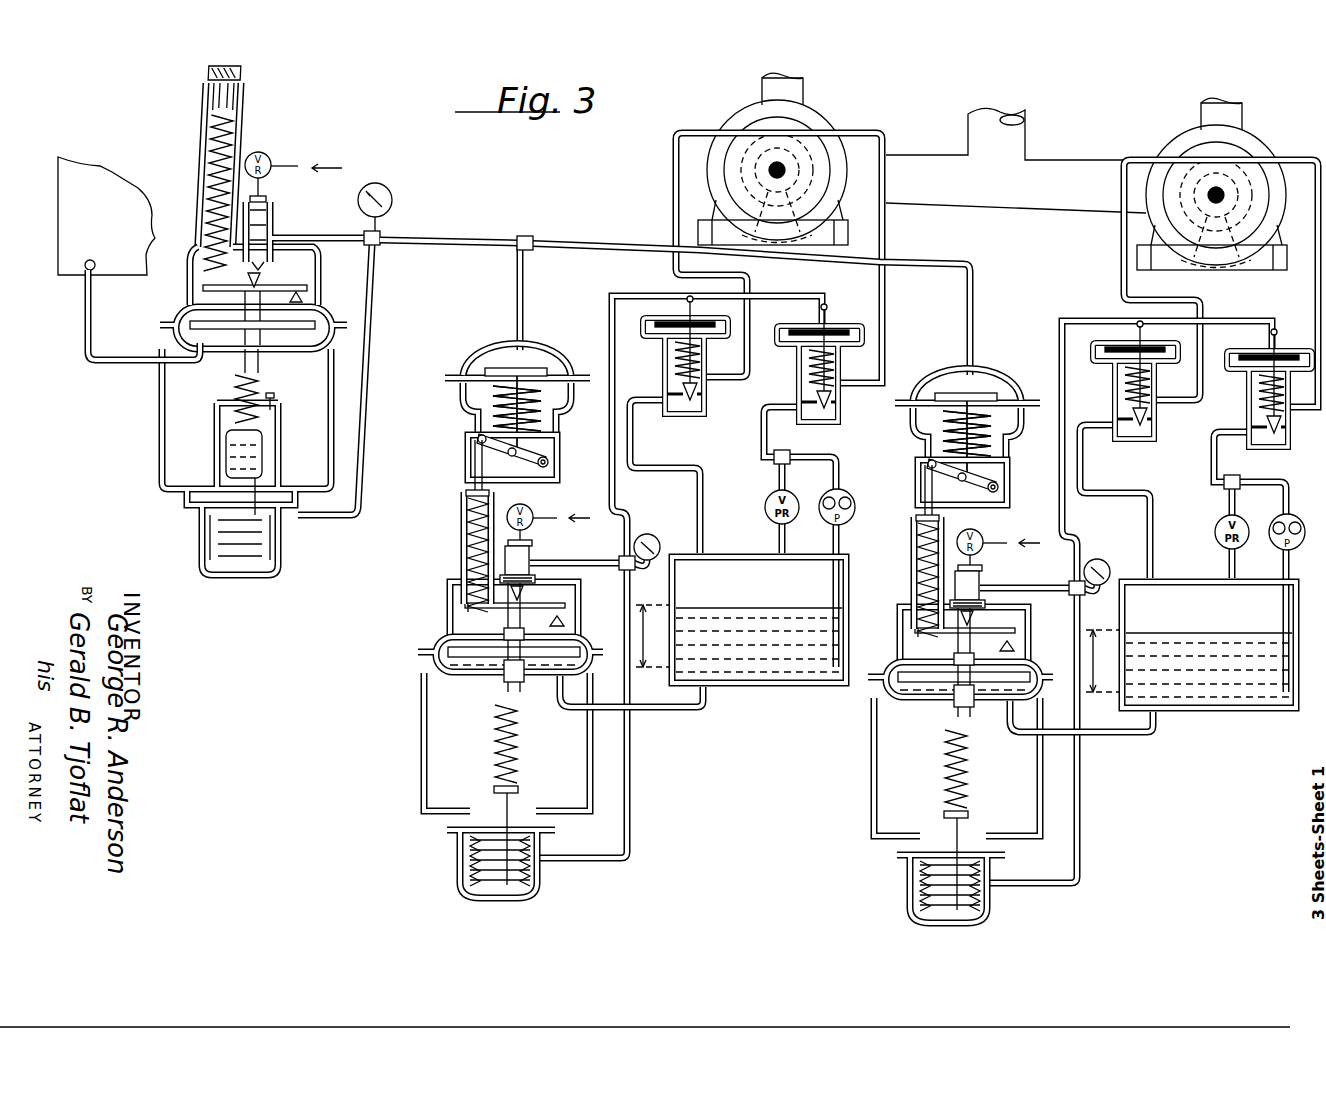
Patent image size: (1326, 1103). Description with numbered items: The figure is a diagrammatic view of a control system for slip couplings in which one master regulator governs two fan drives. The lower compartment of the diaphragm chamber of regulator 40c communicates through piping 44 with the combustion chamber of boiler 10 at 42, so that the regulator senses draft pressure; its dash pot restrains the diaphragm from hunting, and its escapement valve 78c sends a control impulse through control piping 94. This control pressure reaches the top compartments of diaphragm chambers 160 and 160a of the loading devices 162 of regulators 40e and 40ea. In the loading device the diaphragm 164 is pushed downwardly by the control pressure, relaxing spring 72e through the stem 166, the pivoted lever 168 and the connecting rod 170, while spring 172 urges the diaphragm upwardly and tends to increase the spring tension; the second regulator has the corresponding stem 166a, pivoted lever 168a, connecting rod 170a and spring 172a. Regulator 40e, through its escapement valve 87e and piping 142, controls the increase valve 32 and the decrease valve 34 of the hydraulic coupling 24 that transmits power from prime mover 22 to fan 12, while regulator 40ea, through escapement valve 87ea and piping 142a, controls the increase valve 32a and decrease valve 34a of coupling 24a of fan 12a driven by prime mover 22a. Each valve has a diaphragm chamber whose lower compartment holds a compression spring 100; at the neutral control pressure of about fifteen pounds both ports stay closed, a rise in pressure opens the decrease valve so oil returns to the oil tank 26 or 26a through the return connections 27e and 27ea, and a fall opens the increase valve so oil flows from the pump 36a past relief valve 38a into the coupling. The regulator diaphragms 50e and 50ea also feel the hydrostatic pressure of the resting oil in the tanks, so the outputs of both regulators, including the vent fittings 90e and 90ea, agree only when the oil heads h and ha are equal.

The boiler 10 is at (134, 180).
The fan 12 is at (742, 111).
The fan 12a is at (1257, 142).
The prime mover 22 is at (745, 131).
The prime mover 22a is at (1270, 180).
The hydraulic coupling 24 is at (705, 184).
The hydraulic coupling 24a is at (1256, 210).
The oil tank 26 is at (728, 687).
The oil tank 26a is at (1209, 660).
The pipe 27e is at (644, 712).
The pipe 27ea is at (1092, 737).
The increase valve 32 is at (868, 377).
The increase valve 32a is at (1259, 388).
The decrease valve 34 is at (650, 377).
The decrease valve 34a is at (1125, 380).
The pump 36a is at (1280, 518).
The pressure regulator 38a is at (1214, 527).
The regulator 40c is at (227, 320).
The regulator 40e is at (494, 694).
The regulator 40ea is at (941, 718).
The combustion chamber connection point 42 is at (95, 262).
The piping 44 is at (118, 360).
The diaphragm 50e is at (450, 641).
The diaphragm 50ea is at (945, 670).
The spring 72e is at (463, 530).
The escapement valve 78c is at (322, 222).
The escapement valve 87e is at (560, 553).
The escapement valve 87ea is at (994, 581).
The vent regulator 90e is at (562, 522).
The vent regulator 90ea is at (998, 534).
The control piping 94 is at (418, 237).
The compression spring 100 is at (707, 350).
The piping 142 is at (609, 493).
The piping 142a is at (1064, 602).
The diaphragm chamber 160 is at (477, 350).
The diaphragm chamber 160a is at (967, 409).
The loading device 162 is at (509, 409).
The diaphragm 164 is at (533, 366).
The stem 166 is at (558, 446).
The stem 166a is at (988, 475).
The pivoted lever 168 is at (556, 472).
The pivoted lever 168a is at (1026, 483).
The connecting rod 170 is at (478, 470).
The connecting rod 170a is at (902, 492).
The spring 172 is at (553, 415).
The spring 172a is at (1004, 437).
The oil head h is at (653, 636).
The oil head ha is at (1103, 661).